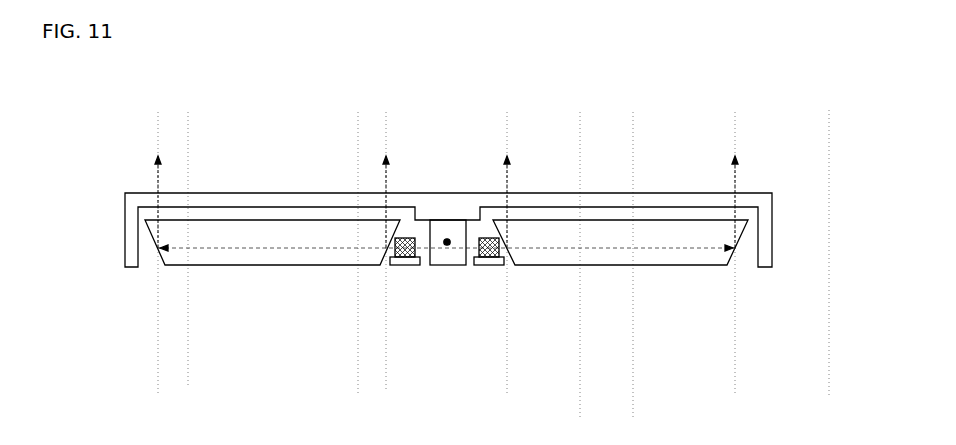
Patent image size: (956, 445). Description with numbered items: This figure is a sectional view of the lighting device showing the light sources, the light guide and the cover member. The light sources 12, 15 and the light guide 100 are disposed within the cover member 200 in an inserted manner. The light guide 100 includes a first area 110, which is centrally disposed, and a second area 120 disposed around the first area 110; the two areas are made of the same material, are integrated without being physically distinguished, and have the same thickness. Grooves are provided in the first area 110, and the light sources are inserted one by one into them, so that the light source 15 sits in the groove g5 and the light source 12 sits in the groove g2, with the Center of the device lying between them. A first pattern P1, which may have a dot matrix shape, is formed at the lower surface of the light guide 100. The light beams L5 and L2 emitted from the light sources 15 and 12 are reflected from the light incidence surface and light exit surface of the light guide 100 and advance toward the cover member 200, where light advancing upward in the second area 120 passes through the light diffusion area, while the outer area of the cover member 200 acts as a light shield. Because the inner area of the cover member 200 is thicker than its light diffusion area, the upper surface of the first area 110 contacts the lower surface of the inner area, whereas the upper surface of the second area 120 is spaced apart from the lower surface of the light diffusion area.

The cover member 200 is at (775, 180).
The light guide 100 is at (461, 290).
The second area 120 is at (268, 287).
The first area 110 is at (495, 292).
The light source 15 is at (384, 276).
The light source 12 is at (510, 276).
The first pattern P1 is at (200, 268).
The light beam L5 is at (272, 202).
The light beam L2 is at (621, 202).
The fifth groove g5 is at (422, 250).
The second groove g2 is at (472, 250).
The center point Center is at (447, 246).